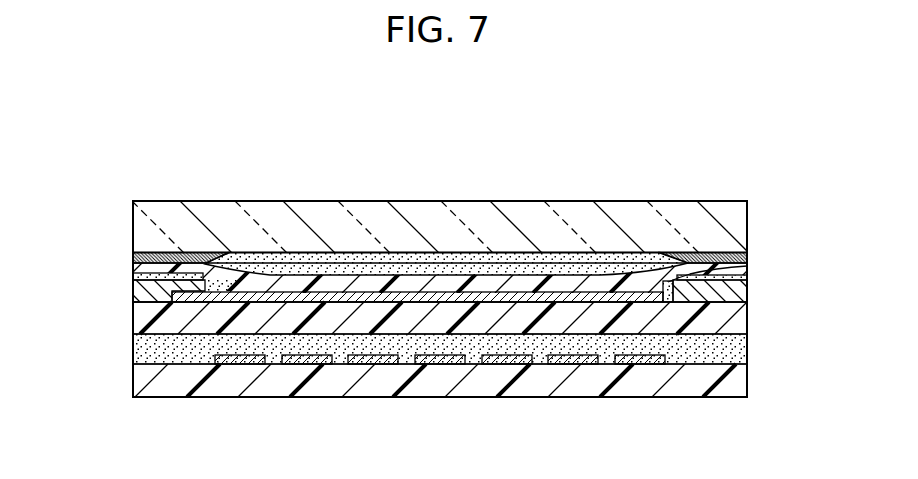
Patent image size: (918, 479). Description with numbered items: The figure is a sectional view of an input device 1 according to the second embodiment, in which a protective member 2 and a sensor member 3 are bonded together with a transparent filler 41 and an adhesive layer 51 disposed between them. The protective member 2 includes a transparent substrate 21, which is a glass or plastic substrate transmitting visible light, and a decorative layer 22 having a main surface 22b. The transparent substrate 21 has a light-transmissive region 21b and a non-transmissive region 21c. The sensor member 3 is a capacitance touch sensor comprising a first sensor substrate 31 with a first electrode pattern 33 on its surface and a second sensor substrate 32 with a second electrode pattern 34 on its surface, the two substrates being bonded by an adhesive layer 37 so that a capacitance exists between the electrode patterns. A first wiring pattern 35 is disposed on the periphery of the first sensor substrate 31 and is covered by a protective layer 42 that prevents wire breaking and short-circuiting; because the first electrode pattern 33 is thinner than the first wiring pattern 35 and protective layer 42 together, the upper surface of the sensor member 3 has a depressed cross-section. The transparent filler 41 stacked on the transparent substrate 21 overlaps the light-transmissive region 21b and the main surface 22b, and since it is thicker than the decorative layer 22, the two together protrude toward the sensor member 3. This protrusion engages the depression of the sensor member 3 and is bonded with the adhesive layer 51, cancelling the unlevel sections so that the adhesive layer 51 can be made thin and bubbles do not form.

The input device 1 is at (558, 130).
The protective member 2 is at (810, 152).
The sensor member 3 is at (760, 400).
The transparent substrate 21 is at (747, 215).
The light-transmissive region 21b is at (642, 185).
The non-transmissive region 21c is at (230, 185).
The decorative layer 22 is at (747, 252).
The main surface 22b is at (747, 266).
The first sensor substrate 31 is at (448, 334).
The second sensor substrate 32 is at (513, 390).
The first electrode pattern 33 is at (573, 300).
The second electrode pattern 34 is at (640, 365).
The first wiring pattern 35 is at (133, 297).
The adhesive layer 37 is at (685, 357).
The transparent filler 41 is at (263, 268).
The protective layer 42 is at (133, 277).
The adhesive layer 51 is at (323, 292).